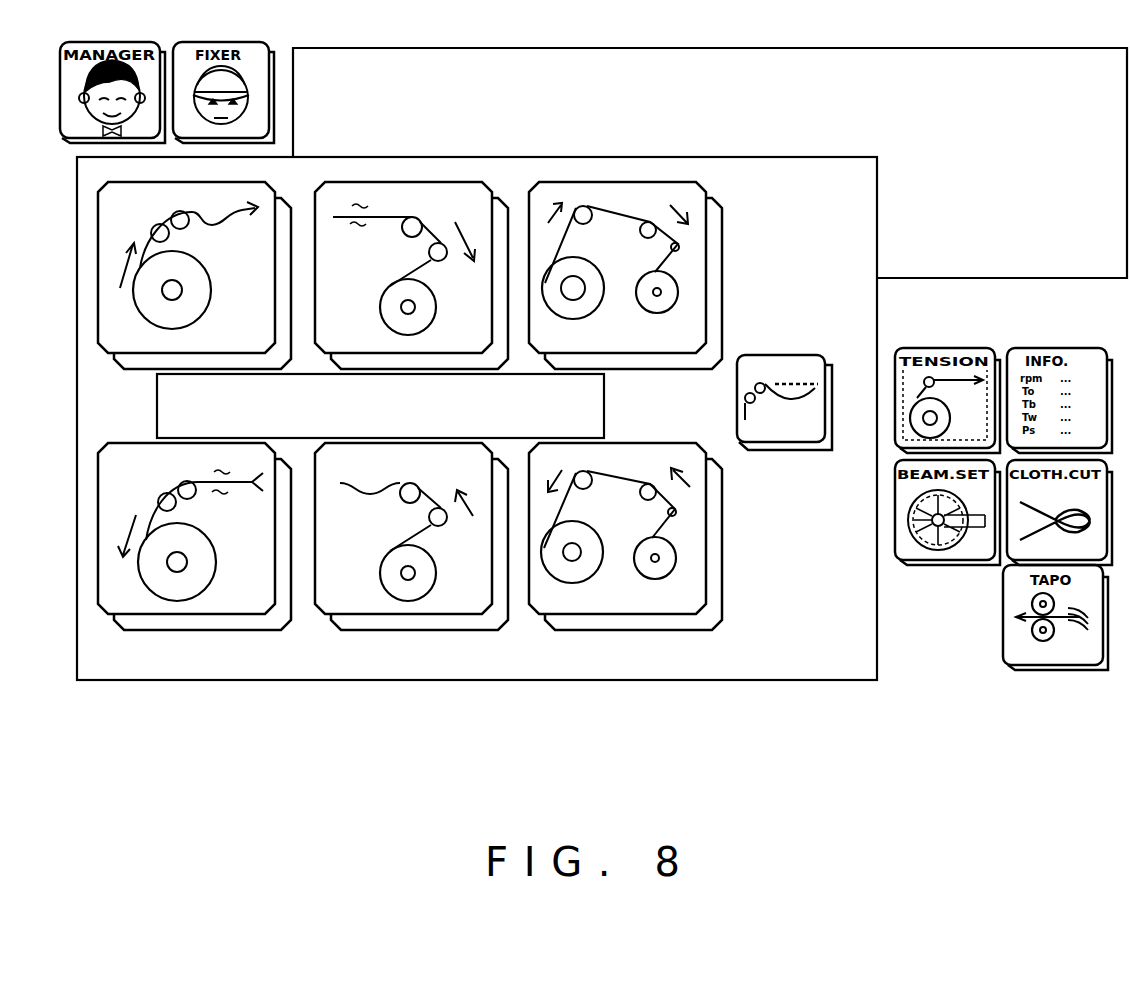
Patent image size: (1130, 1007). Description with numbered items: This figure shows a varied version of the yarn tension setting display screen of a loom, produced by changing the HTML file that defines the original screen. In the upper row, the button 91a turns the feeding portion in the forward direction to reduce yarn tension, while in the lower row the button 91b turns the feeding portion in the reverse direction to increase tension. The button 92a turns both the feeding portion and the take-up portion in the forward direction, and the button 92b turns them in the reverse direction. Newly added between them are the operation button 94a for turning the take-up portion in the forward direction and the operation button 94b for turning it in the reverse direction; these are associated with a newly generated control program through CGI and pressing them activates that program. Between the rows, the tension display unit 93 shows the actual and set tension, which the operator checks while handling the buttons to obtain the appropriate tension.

The button 91a is at (281, 190).
The operation button 94a is at (456, 178).
The button 92a is at (606, 178).
The button 91b is at (172, 632).
The operation button 94b is at (395, 632).
The button 92b is at (622, 632).
The tension display unit 93 is at (607, 398).